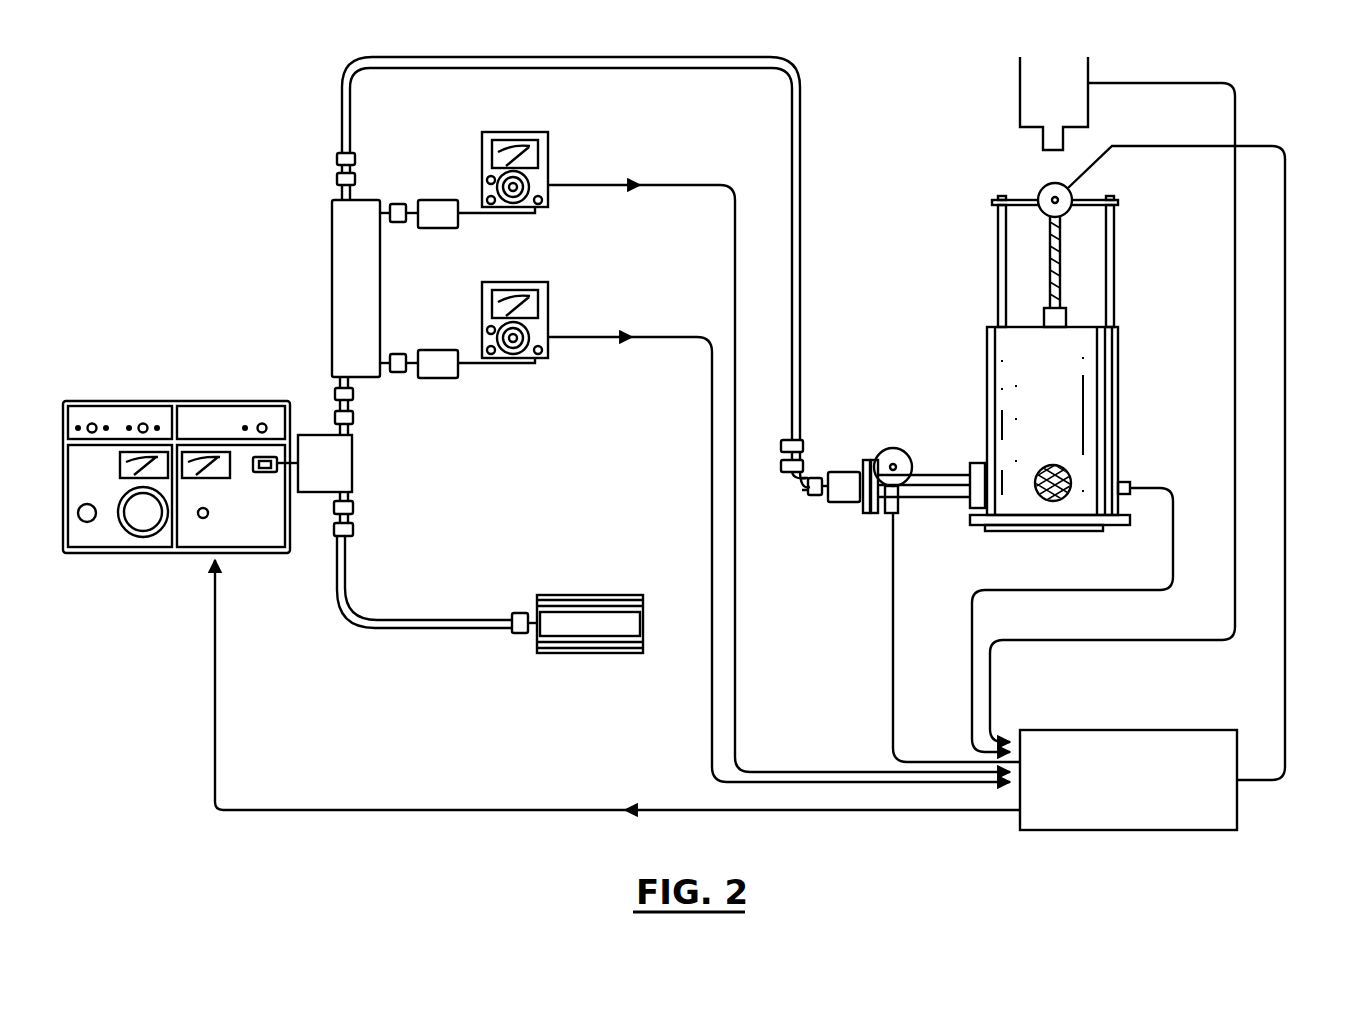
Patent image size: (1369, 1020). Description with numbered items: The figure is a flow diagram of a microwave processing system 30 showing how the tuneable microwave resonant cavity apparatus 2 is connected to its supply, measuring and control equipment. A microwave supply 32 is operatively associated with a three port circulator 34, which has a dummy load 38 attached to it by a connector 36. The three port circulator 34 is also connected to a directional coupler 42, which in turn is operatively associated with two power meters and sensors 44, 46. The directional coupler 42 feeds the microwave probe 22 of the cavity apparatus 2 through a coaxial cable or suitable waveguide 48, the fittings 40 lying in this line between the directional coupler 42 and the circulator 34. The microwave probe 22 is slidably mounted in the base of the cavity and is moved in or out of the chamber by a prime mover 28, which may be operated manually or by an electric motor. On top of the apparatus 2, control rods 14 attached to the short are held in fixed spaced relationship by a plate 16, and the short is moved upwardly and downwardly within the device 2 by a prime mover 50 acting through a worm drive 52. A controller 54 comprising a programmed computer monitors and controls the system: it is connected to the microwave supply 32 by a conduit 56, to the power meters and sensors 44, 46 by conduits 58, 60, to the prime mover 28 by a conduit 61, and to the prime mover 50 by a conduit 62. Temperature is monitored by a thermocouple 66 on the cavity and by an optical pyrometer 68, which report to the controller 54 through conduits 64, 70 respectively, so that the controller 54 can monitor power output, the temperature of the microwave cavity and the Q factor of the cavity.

The tuneable microwave resonant cavity apparatus 2 is at (1118, 376).
The control rods 14 is at (998, 232).
The plate 16 is at (1118, 205).
The microwave probe 22 is at (945, 500).
The prime mover 28 is at (900, 450).
The microwave processing system 30 is at (365, 48).
The microwave supply 32 is at (140, 400).
The three port circulator 34 is at (352, 474).
The connector 36 is at (404, 618).
The dummy load 38 is at (600, 595).
The fittings 40 is at (353, 396).
The directional coupler 42 is at (332, 262).
The power meter and sensor 44 is at (548, 300).
The power meter and sensor 46 is at (548, 160).
The coaxial cable or waveguide 48 is at (800, 152).
The prime mover 50 is at (1040, 190).
The worm drive 52 is at (1048, 276).
The controller 54 is at (1150, 730).
The conduit 56 is at (533, 810).
The conduit 58 is at (732, 545).
The conduit 60 is at (738, 592).
The conduit 61 is at (888, 668).
The conduit 62 is at (1290, 342).
The conduit 64 is at (1082, 590).
The thermocouple 66 is at (1128, 483).
The optical pyrometer 68 is at (1020, 92).
The conduit 70 is at (1238, 342).